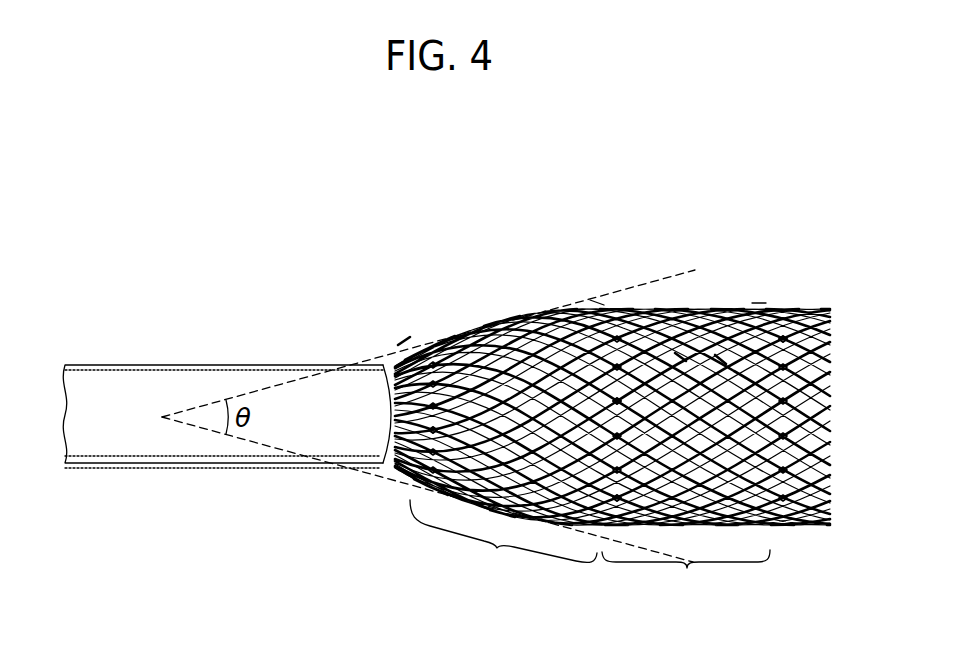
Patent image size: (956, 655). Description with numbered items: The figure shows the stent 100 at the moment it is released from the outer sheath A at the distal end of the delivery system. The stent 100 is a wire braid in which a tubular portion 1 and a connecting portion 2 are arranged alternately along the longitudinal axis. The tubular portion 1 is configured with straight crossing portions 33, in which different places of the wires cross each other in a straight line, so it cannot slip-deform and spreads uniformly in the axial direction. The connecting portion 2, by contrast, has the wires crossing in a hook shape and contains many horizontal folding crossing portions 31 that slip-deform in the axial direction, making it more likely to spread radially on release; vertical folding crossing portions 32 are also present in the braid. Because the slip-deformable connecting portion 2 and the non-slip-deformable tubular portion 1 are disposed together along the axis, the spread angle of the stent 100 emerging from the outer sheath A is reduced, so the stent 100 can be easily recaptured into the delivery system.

The stent 100 is at (767, 189).
The tubular portion 1 is at (590, 556).
The connecting portion 2 is at (418, 346).
The horizontal folding crossing portion 31 is at (624, 436).
The vertical folding crossing portion 32 is at (784, 339).
The straight crossing portion 33 is at (680, 357).
The outer sheath A is at (153, 378).